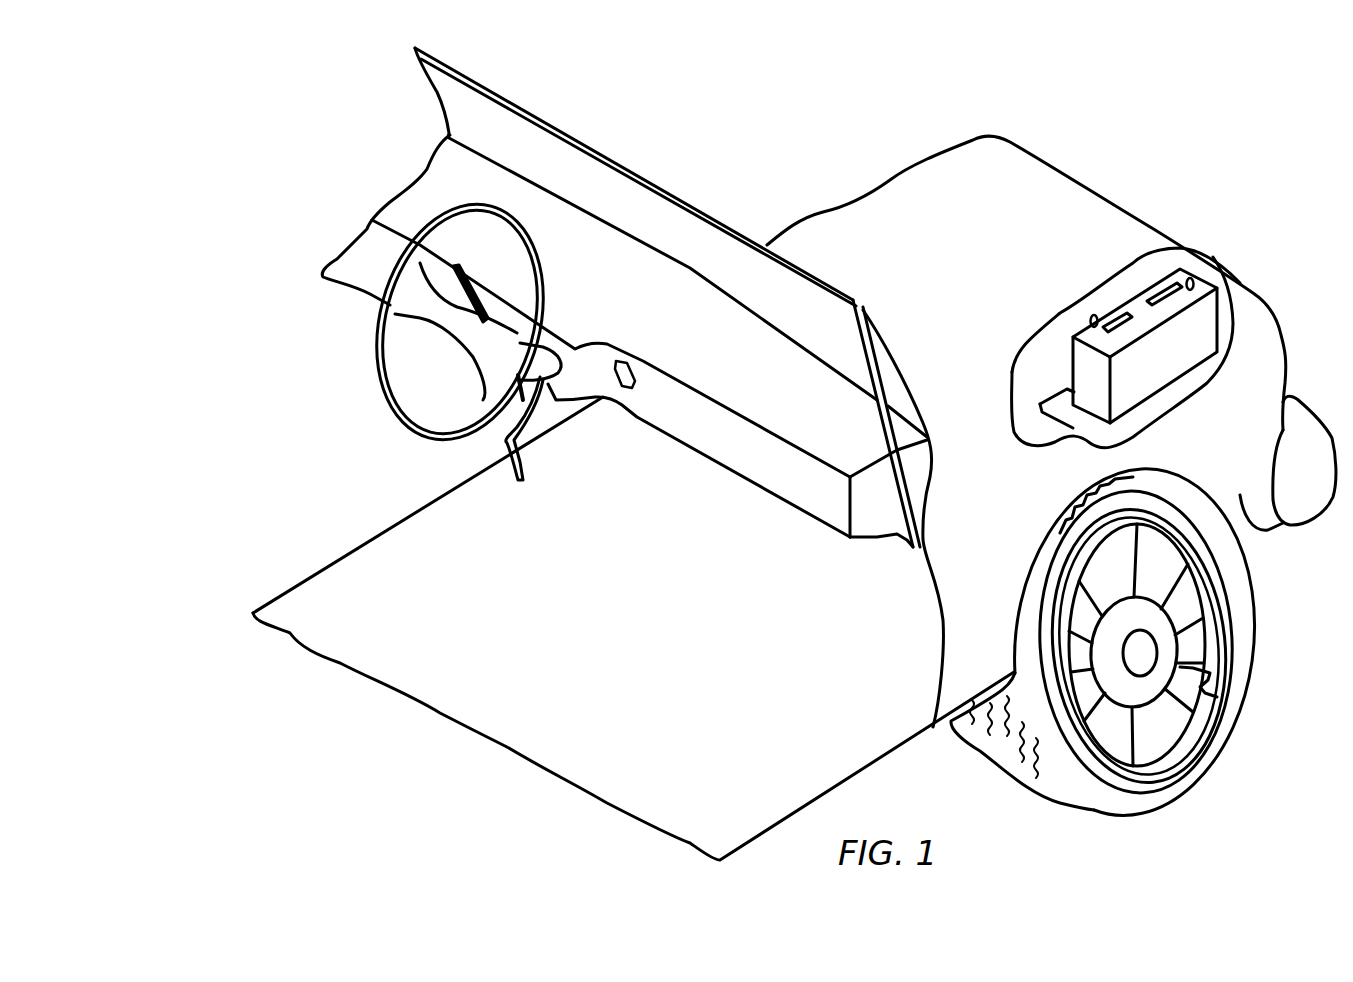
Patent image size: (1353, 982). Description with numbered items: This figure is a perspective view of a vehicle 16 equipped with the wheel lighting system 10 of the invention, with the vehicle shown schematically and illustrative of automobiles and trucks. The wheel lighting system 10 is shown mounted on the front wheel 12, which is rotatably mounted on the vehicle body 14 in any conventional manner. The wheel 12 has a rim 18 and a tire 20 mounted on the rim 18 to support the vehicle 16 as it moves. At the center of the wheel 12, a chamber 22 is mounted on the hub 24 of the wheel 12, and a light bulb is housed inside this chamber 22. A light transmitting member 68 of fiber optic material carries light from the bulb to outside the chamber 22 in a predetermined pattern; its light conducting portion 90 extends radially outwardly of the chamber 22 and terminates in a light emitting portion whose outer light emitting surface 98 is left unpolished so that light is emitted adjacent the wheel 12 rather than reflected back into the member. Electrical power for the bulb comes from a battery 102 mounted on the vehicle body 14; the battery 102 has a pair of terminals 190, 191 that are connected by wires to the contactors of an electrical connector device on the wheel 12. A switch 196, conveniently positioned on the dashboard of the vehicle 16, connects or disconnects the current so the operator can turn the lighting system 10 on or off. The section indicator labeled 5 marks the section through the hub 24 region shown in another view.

The section line 5- 5 is at (1137, 655).
The wheel lighting system 10 is at (1217, 697).
The vehicle wheel 12 is at (1087, 803).
The vehicle body 14 is at (827, 773).
The vehicle 16 is at (1023, 200).
The rim 18 is at (1203, 708).
The tire 20 is at (1200, 767).
The chamber 22 is at (1152, 655).
The hub 24 is at (1152, 643).
The light transmitting member 68 is at (1130, 688).
The light conducting portion 90 is at (1137, 607).
The light emitting surface 98 is at (1080, 637).
The battery 102 is at (1143, 370).
The terminal 190 is at (1193, 275).
The terminal 191 is at (1097, 312).
The switch 196 is at (627, 388).